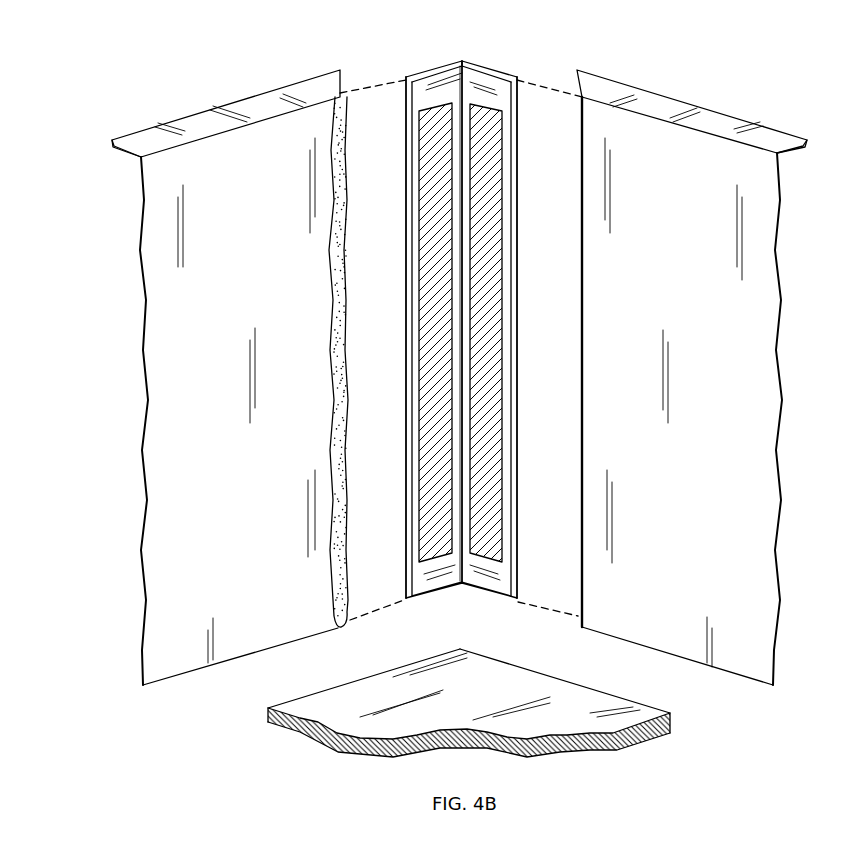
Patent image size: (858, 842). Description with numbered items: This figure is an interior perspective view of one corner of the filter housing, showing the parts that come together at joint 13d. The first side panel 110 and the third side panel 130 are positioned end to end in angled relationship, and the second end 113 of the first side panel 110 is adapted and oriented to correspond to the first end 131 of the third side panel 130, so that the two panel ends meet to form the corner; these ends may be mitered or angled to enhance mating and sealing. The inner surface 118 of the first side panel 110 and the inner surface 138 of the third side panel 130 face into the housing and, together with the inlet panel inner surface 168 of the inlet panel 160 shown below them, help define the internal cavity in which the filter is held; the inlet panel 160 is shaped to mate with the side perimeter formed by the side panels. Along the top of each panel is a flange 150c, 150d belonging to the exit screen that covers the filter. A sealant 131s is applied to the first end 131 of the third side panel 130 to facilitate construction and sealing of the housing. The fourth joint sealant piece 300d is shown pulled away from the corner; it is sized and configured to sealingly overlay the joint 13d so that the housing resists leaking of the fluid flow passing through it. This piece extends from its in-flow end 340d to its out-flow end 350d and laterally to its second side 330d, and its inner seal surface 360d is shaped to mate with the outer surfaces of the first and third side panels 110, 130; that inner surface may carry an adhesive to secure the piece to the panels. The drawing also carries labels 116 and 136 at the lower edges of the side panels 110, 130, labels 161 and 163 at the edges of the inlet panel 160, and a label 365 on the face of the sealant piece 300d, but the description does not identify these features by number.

The joint 13d is at (572, 31).
The first side panel 110 is at (735, 327).
The second end 113 is at (580, 594).
The panel bottom edge 116 is at (752, 683).
The side panel inner surface 118 is at (669, 294).
The third side panel 130 is at (190, 252).
The first end 131 is at (352, 618).
The sealant 131s is at (347, 614).
The panel bottom edge 136 is at (180, 677).
The side panel inner surface 138 is at (254, 294).
The flange 150c is at (245, 108).
The flange 150d is at (713, 120).
The inlet panel 160 is at (620, 720).
The plate edge 161 is at (620, 697).
The plate edge 163 is at (270, 697).
The inlet panel inner surface 168 is at (490, 699).
The fourth joint sealant piece 300d is at (438, 60).
The second side 330d is at (407, 515).
The in-flow end 340d is at (440, 590).
The out-flow end 350d is at (410, 77).
The inner seal surface 360d is at (483, 96).
The adhesive strip 365 is at (438, 167).